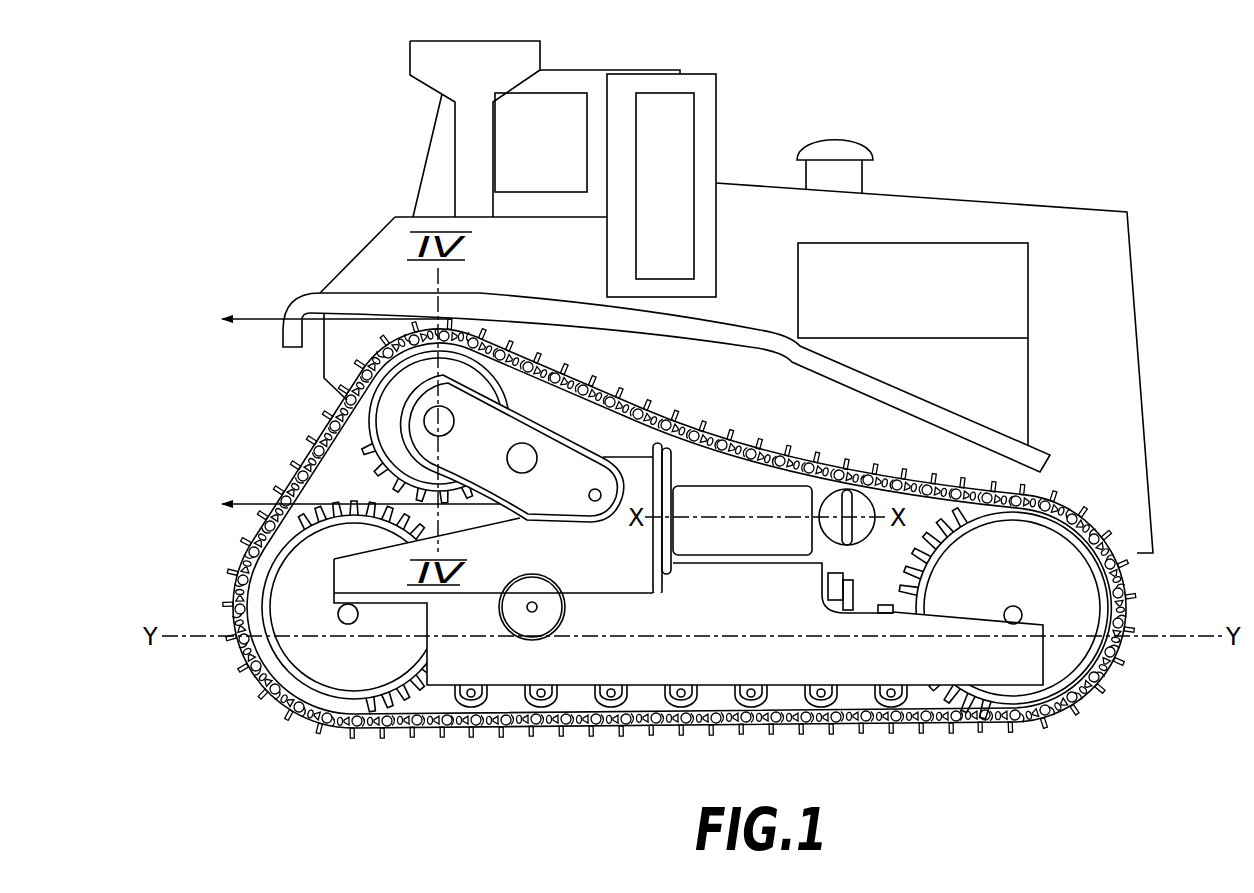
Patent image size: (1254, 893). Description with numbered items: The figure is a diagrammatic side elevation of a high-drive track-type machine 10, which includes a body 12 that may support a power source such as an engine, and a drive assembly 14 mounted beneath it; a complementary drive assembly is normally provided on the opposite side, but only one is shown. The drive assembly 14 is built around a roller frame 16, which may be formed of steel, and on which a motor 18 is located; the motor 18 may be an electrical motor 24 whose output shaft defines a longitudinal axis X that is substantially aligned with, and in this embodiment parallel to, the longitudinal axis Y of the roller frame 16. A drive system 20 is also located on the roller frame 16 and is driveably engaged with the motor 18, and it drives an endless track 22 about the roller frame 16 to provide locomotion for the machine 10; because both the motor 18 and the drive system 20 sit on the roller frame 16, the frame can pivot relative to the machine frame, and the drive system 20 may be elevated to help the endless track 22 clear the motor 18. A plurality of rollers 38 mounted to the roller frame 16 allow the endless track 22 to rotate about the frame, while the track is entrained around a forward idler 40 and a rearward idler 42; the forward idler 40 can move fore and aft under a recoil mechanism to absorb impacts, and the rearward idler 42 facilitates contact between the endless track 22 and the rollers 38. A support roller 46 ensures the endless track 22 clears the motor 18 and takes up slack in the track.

The track-type machine 10 is at (743, 297).
The body 12 is at (1131, 253).
The drive assembly 14 is at (676, 560).
The roller frame 16 is at (706, 665).
The motor 18 is at (697, 466).
The drive system 20 is at (336, 374).
The endless track 22 is at (620, 735).
The electrical motor 24 is at (756, 486).
The rollers 38 is at (558, 700).
The forward idler 40 is at (1071, 657).
The rearward idler 42 is at (312, 657).
The support roller 46 is at (855, 503).